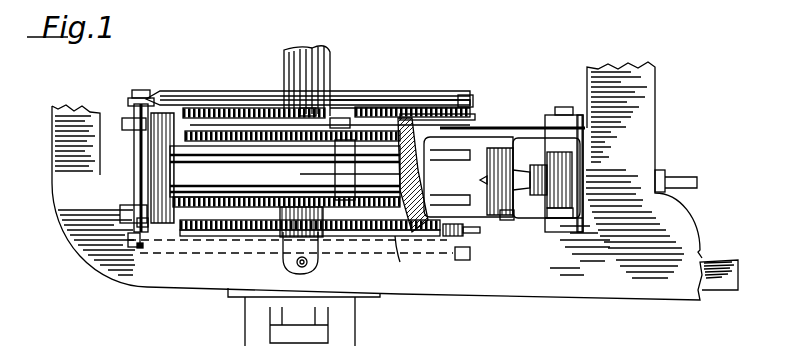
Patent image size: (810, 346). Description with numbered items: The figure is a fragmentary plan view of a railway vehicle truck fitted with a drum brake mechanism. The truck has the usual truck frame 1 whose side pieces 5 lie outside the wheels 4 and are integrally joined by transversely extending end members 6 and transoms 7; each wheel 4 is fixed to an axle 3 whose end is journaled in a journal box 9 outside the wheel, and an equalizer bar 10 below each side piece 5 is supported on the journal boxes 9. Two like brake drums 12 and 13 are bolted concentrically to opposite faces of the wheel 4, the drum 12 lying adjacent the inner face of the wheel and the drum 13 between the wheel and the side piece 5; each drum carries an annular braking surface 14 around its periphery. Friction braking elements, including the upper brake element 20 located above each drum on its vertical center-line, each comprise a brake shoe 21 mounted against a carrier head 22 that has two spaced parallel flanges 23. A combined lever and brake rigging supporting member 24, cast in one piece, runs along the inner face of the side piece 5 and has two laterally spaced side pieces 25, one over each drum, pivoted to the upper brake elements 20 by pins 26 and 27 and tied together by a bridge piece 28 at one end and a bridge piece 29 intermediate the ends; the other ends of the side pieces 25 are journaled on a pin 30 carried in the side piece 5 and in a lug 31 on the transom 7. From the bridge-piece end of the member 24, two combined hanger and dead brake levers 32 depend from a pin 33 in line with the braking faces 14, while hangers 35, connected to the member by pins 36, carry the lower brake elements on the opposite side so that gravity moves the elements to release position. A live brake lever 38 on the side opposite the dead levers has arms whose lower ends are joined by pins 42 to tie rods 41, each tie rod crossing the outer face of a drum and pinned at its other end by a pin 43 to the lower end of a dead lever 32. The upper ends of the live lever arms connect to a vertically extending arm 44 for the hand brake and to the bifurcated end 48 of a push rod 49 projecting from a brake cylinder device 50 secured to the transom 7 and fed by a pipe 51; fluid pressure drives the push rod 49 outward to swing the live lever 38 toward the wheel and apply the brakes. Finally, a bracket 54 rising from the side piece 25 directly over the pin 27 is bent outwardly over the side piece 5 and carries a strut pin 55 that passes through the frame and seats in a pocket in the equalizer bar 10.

The truck frame 1 is at (168, 288).
The axle 3 is at (286, 60).
The wheel 4 is at (503, 236).
The side piece 5 is at (425, 282).
The end member 6 is at (54, 163).
The transom 7 is at (650, 120).
The journal box 9 is at (256, 310).
The equalizer bar 10 is at (736, 277).
The brake drum 12 is at (386, 105).
The brake drum 13 is at (408, 237).
The annular braking surface 14 is at (200, 110).
The brake element 20 is at (345, 118).
The brake shoe 21 is at (372, 112).
The carrier head 22 is at (336, 110).
The flange 23 is at (345, 198).
The combined lever and brake rigging supporting member 24 is at (170, 94).
The side piece 25 is at (236, 125).
The pin 26 is at (306, 108).
The pin 27 is at (318, 207).
The bridge piece 28 is at (172, 172).
The bridge piece 29 is at (398, 172).
The pin 30 is at (565, 107).
The lug 31 is at (544, 120).
The combined hanger and dead brake lever 32 is at (124, 118).
The pin 33 is at (138, 167).
The hanger 35 is at (448, 128).
The pin 36 is at (448, 152).
The live brake lever 38 is at (512, 222).
The tie rod 41 is at (400, 108).
The pin 42 is at (460, 95).
The pin 43 is at (145, 90).
The arm 44 is at (513, 200).
The bifurcated end 48 is at (490, 154).
The push rod 49 is at (540, 232).
The brake cylinder device 50 is at (657, 193).
The pipe 51 is at (672, 177).
The bracket 54 is at (270, 246).
The strut pin 55 is at (297, 264).